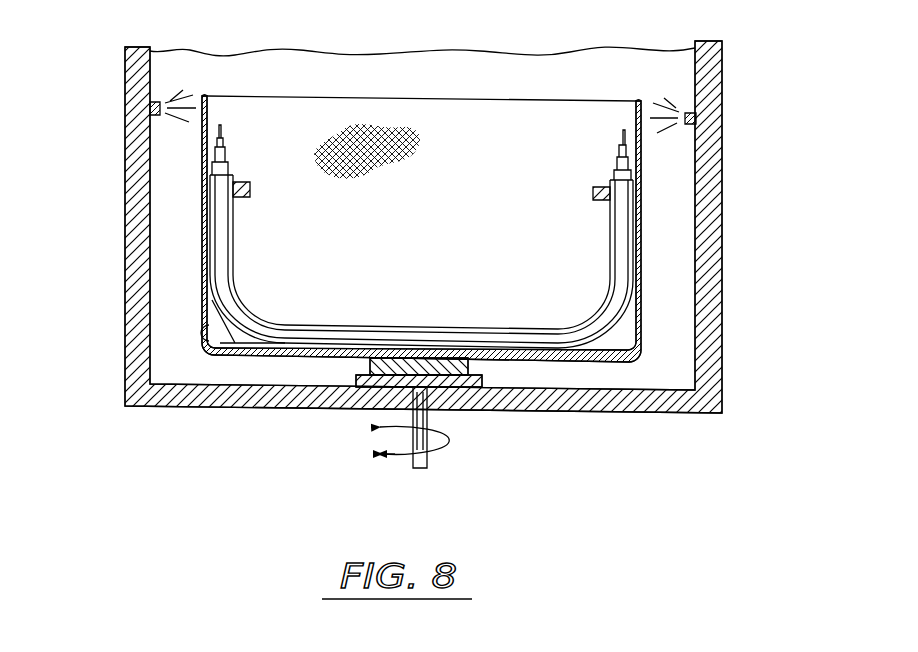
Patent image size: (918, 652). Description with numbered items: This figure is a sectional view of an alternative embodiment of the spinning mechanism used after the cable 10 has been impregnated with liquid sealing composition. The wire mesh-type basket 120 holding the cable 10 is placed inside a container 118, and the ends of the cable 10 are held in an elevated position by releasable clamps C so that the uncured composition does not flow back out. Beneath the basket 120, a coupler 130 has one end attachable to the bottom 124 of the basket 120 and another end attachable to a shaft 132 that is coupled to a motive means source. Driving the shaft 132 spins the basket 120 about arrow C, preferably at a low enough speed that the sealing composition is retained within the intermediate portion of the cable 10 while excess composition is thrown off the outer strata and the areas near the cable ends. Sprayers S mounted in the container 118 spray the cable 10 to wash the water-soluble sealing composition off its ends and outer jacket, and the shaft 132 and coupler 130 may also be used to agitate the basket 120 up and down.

The container 118 is at (124, 203).
The wire mesh-type basket 120 is at (641, 318).
The cable 10 is at (266, 294).
The bottom of the basket 124 is at (470, 362).
The coupler 130 is at (343, 385).
The shaft 132 is at (425, 470).
The sprayer S is at (159, 102).
The releasable clamps / arrow C is at (243, 182).